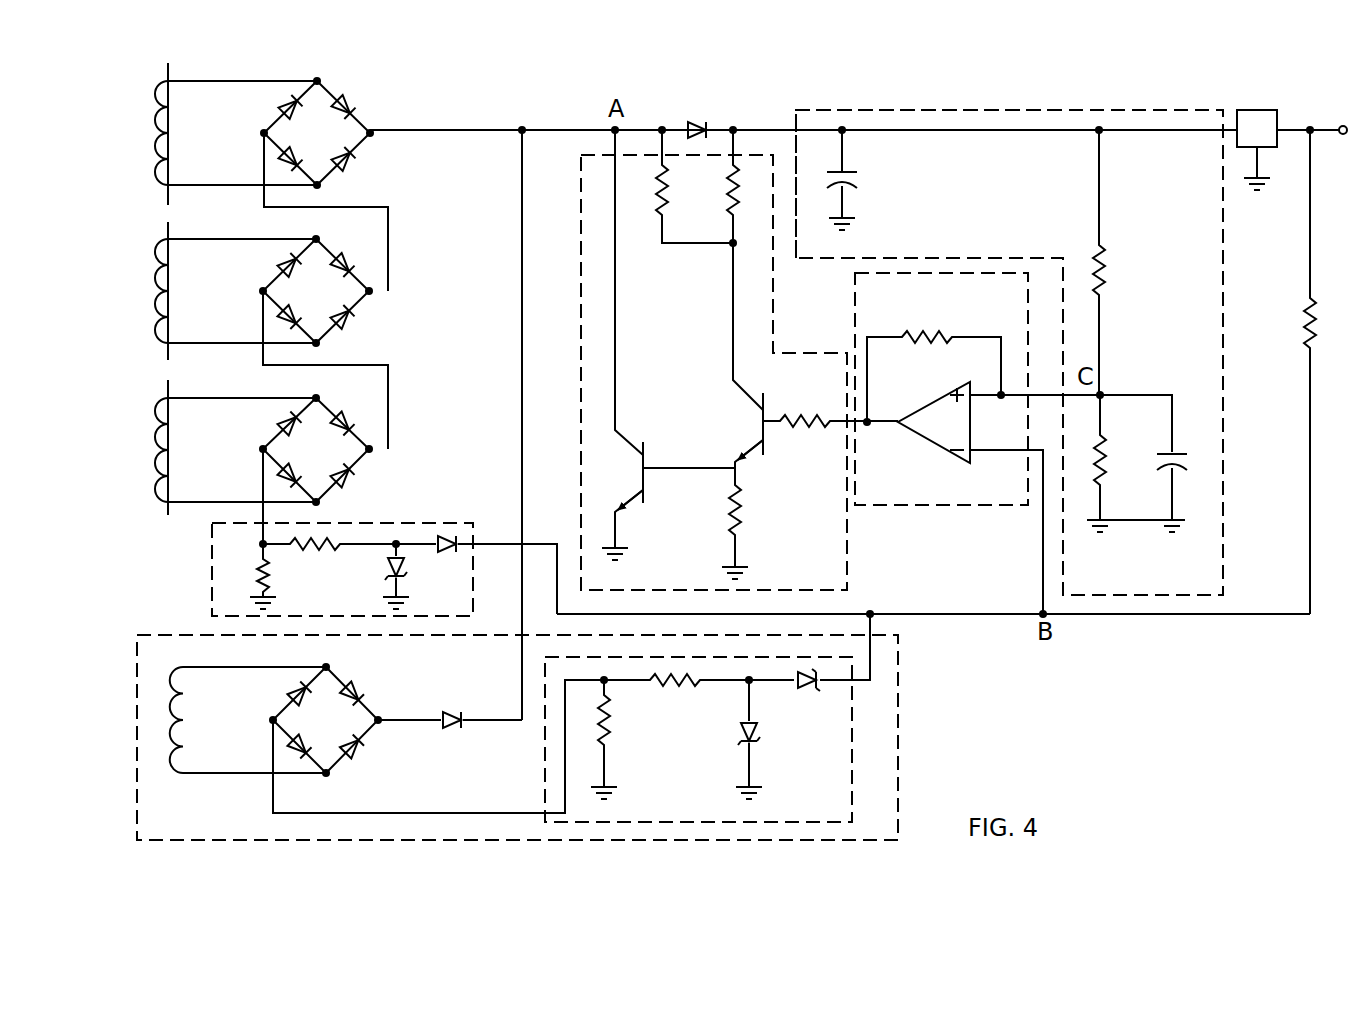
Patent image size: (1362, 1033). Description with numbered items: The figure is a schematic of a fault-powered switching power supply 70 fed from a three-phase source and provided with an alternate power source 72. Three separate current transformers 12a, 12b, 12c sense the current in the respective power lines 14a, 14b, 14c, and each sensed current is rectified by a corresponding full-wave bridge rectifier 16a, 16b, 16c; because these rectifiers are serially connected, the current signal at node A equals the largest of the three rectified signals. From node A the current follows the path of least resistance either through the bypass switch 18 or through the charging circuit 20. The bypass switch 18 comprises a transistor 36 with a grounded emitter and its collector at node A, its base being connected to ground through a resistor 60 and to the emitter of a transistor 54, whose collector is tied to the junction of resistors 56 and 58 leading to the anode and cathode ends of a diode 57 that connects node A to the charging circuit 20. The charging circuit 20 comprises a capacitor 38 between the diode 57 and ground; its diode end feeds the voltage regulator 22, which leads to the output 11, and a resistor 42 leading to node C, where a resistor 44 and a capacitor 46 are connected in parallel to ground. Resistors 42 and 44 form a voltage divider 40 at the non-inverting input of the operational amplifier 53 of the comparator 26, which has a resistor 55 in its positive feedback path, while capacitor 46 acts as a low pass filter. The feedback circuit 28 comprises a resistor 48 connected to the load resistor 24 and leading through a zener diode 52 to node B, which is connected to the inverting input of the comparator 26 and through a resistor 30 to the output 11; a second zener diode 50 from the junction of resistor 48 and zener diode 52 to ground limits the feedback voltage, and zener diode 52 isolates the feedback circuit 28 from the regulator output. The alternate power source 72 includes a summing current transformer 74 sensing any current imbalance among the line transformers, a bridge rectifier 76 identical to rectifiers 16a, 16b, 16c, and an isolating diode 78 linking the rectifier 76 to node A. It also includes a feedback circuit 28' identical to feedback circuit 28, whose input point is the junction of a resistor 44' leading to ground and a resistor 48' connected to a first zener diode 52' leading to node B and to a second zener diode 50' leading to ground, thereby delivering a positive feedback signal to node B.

The output 11 is at (1327, 120).
The current transformer 12a is at (163, 137).
The current transformer 12b is at (168, 290).
The current transformer 12c is at (168, 447).
The power line 14a is at (168, 66).
The power line 14b is at (168, 222).
The power line 14c is at (168, 382).
The full-wave rectifier 16a is at (370, 108).
The full-wave rectifier 16b is at (364, 322).
The full-wave rectifier 16c is at (372, 468).
The bypass switch 18 is at (863, 565).
The charging circuit 20 is at (1060, 105).
The voltage regulator 22 is at (1257, 108).
The load resistor 24 is at (268, 575).
The comparator 26 is at (955, 506).
The feedback circuit 28 is at (303, 568).
The feedback circuit 28' is at (647, 739).
The resistor 30 is at (1305, 323).
The transistor 36 is at (648, 456).
The capacitor 38 is at (852, 178).
The voltage divider 40 is at (1123, 380).
The resistor 42 is at (1107, 268).
The resistor 44 is at (1126, 463).
The resistor 44' is at (643, 739).
The capacitor 46 is at (1178, 450).
The resistor 48 is at (335, 519).
The resistor 48' is at (686, 709).
The zener diode 50 is at (425, 576).
The zener diode 50' is at (781, 739).
The zener diode 52 is at (467, 520).
The zener diode 52' is at (823, 709).
The operational amplifier 53 is at (930, 440).
The transistor 54 is at (745, 420).
The resistor 55 is at (922, 333).
The resistor 56 is at (655, 220).
The diode 57 is at (698, 120).
The resistor 58 is at (727, 195).
The resistor 60 is at (732, 508).
The power supply 70 is at (890, 88).
The alternate power source 72 is at (147, 633).
The summing current transformer 74 is at (170, 776).
The bridge rectifier 76 is at (366, 686).
The isolating diode 78 is at (450, 715).